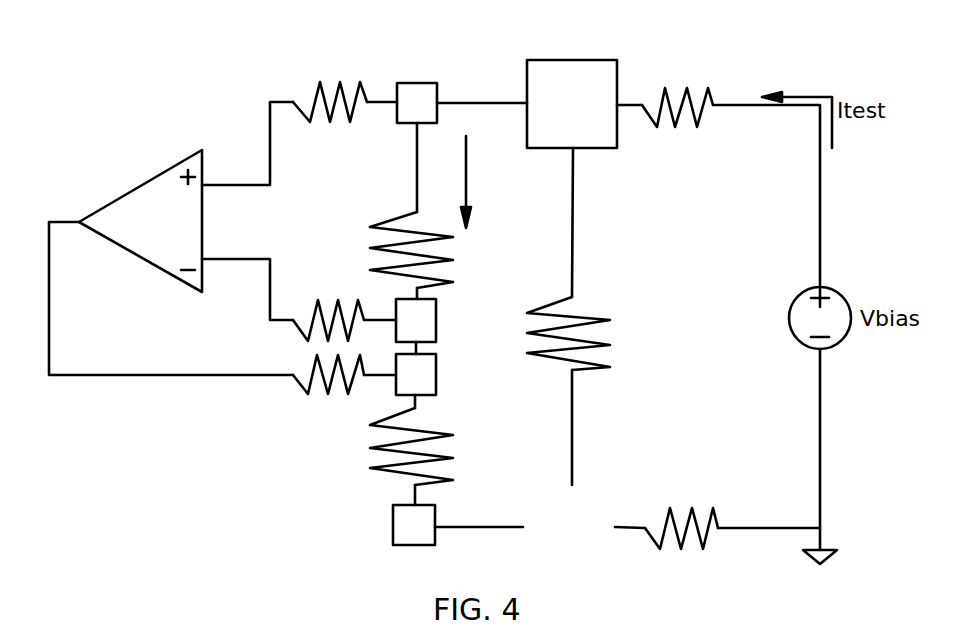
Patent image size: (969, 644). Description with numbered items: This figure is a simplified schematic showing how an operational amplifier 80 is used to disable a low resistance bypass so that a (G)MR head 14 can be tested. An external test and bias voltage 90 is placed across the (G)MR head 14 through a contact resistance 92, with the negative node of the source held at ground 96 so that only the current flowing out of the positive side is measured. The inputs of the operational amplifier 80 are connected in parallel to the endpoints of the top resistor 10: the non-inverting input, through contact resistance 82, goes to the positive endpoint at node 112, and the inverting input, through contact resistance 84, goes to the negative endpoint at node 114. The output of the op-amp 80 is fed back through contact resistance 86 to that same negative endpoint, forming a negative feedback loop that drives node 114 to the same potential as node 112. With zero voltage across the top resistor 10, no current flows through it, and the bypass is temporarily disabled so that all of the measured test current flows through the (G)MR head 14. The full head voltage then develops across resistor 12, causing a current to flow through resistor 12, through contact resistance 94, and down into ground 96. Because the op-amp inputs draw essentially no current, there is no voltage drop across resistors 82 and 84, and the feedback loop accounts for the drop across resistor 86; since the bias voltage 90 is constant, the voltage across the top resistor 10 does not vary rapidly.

The top resistor 10 is at (402, 213).
The resistor 12 is at (380, 480).
The (G)MR head 14 is at (596, 312).
The operational amplifier 80 is at (140, 186).
The contact resistance 82 is at (322, 90).
The contact resistance 84 is at (314, 304).
The contact resistance 86 is at (300, 393).
The external test and bias voltage 90 is at (832, 288).
The contact resistance 92 is at (691, 88).
The contact resistance 94 is at (672, 548).
The ground 96 is at (826, 556).
The node 112 is at (573, 77).
The node 114 is at (428, 382).